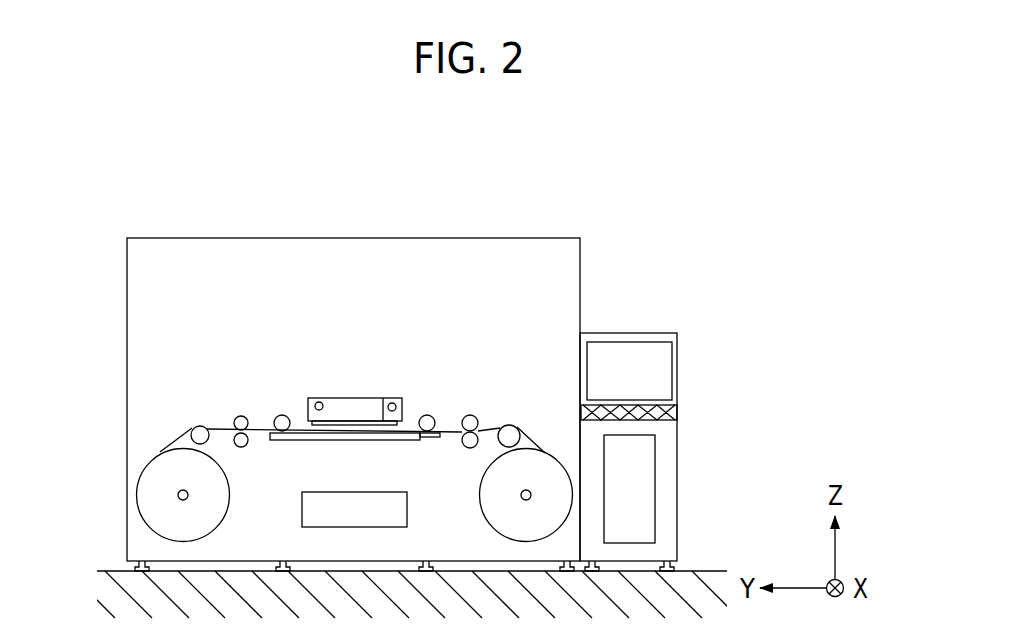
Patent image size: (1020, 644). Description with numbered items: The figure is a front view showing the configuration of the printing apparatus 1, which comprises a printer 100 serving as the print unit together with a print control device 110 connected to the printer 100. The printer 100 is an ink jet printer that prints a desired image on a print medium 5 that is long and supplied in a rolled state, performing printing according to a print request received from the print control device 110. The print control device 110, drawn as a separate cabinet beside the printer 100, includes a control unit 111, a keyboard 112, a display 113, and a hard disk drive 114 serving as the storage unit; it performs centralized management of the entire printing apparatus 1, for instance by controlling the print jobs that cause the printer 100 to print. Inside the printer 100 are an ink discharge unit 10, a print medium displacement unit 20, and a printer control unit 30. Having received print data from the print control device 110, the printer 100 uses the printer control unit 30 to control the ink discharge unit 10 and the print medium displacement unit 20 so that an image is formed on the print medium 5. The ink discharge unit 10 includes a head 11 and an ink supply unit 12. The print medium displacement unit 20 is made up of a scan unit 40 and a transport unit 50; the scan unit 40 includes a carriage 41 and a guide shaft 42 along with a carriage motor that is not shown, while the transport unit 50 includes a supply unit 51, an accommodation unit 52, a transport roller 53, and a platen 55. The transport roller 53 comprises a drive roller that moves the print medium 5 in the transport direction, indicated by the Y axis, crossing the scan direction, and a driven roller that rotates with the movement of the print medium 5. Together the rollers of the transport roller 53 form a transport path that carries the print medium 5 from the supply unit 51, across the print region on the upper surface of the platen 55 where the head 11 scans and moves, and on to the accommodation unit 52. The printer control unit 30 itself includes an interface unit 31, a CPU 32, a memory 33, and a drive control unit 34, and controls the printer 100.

The printing apparatus 1 is at (620, 180).
The printer 100 is at (121, 211).
The print control device 110 is at (660, 286).
The control unit 111 is at (706, 489).
The keyboard 112 is at (668, 414).
The display 113 is at (663, 372).
The hard disk drive 114 is at (645, 489).
The ink discharge unit 10 is at (423, 374).
The head 11 is at (387, 359).
The ink supply unit 12 is at (386, 402).
The print medium displacement unit 20 is at (277, 276).
The printer control unit 30 is at (355, 451).
The interface unit 31 is at (323, 495).
The CPU 32 is at (354, 509).
The memory 33 is at (354, 509).
The drive control unit 34 is at (354, 509).
The scan unit 40 is at (297, 331).
The carriage 41 is at (356, 410).
The guide shaft 42 is at (320, 400).
The print medium 5 is at (500, 425).
The transport unit 50 is at (202, 343).
The supply unit 51 is at (473, 514).
The accommodation unit 52 is at (243, 515).
The transport roller 53 is at (240, 416).
The platen 55 is at (418, 440).